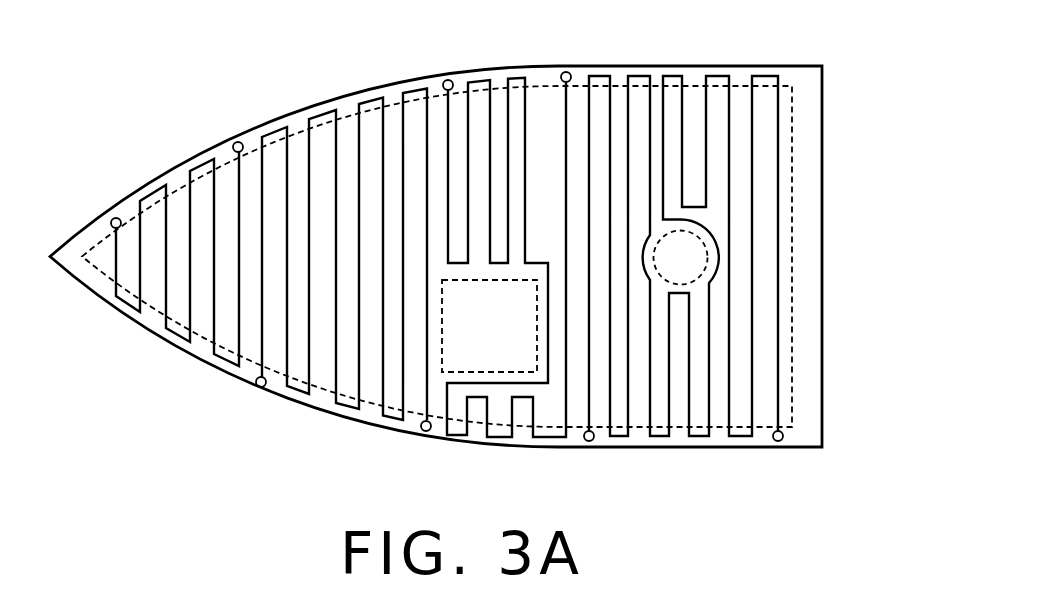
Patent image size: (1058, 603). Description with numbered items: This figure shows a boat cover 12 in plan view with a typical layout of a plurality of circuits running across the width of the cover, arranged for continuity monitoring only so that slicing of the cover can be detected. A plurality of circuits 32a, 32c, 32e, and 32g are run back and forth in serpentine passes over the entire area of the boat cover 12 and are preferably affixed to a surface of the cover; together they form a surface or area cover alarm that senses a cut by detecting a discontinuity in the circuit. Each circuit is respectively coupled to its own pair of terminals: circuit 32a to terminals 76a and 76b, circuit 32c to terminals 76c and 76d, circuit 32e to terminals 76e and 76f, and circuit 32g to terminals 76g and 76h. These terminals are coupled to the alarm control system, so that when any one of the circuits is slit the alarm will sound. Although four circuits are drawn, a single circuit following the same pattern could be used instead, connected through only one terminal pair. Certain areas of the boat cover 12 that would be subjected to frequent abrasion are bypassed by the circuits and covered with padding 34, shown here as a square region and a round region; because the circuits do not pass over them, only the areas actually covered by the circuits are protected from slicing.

The boat cover 12 is at (557, 180).
The circuit 32a is at (674, 74).
The circuit 32c is at (479, 77).
The circuit 32e is at (352, 410).
The circuit 32g is at (174, 339).
The padding 34 is at (500, 338).
The terminal 76a is at (780, 443).
The terminal 76b is at (591, 443).
The terminal 76c is at (568, 71).
The terminal 76d is at (447, 79).
The terminal 76e is at (428, 432).
The terminal 76f is at (263, 389).
The terminal 76g is at (238, 141).
The terminal 76h is at (115, 217).